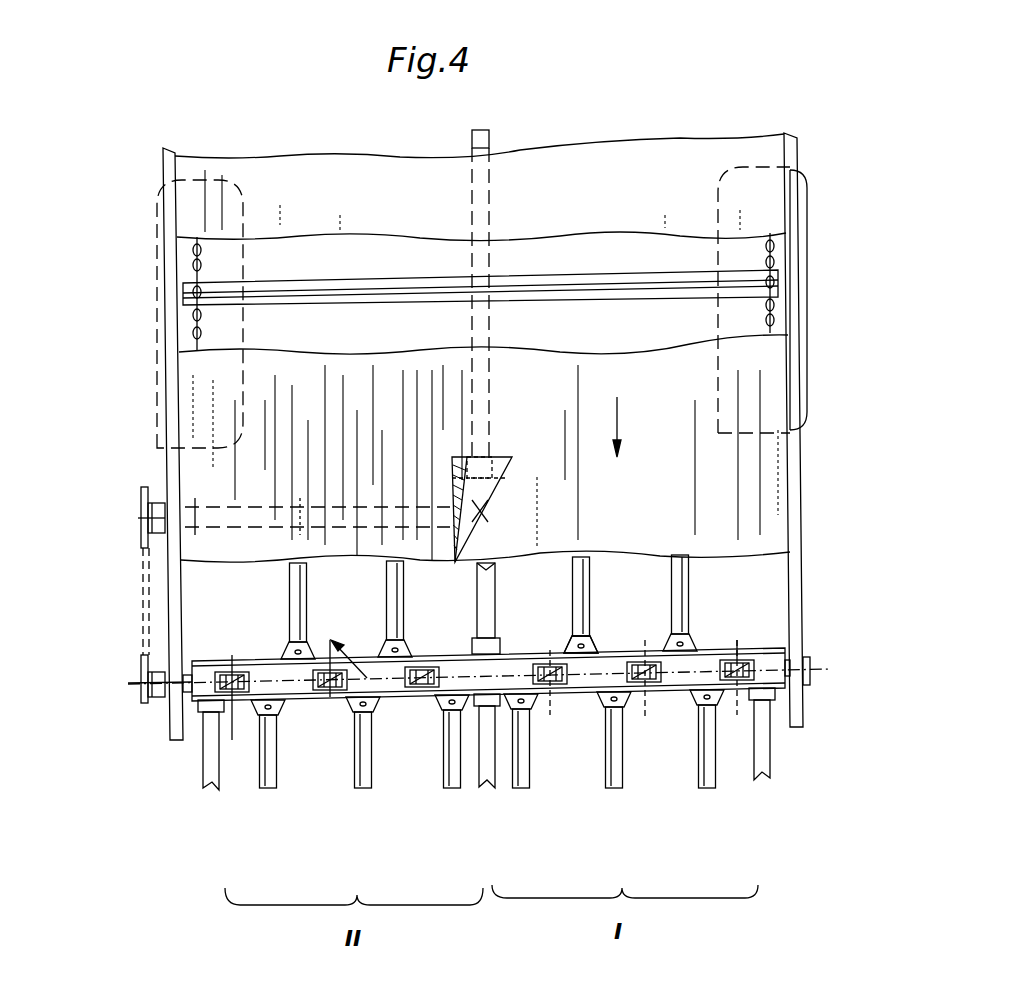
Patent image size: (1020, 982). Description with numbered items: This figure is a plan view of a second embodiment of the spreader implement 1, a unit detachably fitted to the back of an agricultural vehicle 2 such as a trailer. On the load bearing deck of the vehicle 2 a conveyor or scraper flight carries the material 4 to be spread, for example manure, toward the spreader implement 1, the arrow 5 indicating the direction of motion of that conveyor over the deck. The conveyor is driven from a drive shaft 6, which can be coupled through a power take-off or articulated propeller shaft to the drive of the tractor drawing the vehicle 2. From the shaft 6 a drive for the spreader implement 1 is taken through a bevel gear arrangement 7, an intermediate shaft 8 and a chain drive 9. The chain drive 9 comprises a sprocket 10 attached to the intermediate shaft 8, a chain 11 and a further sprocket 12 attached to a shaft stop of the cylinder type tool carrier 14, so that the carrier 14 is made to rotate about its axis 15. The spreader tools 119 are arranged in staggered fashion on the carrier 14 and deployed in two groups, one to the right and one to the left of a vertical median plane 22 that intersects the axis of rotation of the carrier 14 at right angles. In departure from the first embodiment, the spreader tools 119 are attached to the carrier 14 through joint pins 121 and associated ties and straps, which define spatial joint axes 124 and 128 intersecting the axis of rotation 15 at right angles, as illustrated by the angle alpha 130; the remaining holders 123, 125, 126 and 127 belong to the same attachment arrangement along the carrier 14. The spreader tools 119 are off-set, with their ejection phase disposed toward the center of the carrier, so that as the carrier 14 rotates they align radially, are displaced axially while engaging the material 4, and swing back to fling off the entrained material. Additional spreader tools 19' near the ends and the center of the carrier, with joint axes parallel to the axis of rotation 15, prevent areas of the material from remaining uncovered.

The spreader implement 1 is at (810, 640).
The agricultural vehicle 2 is at (798, 267).
The material 4 is at (572, 167).
The arrow 5 is at (617, 433).
The drive shaft 6 is at (490, 142).
The bevel gear arrangement 7 is at (485, 495).
The intermediate shaft 8 is at (268, 512).
The chain drive 9 is at (142, 575).
The sprocket 10 is at (145, 487).
The chain 11 is at (145, 602).
The further sprocket 12 is at (147, 707).
The cylinder type tool carrier 14 is at (685, 685).
The axis of rotation 15 is at (703, 668).
The additional spreader tools 19' is at (479, 762).
The vertical median plane 22 is at (490, 588).
The spreader tools 119 is at (307, 598).
The joint pins 121 is at (593, 635).
The tine holder 123 is at (230, 710).
The spatial joint axis 124 is at (330, 708).
The tine holder 125 is at (418, 713).
The tine holder 126 is at (549, 718).
The tine holder 127 is at (645, 718).
The spatial joint axis 128 is at (738, 653).
The angle 130 is at (367, 660).